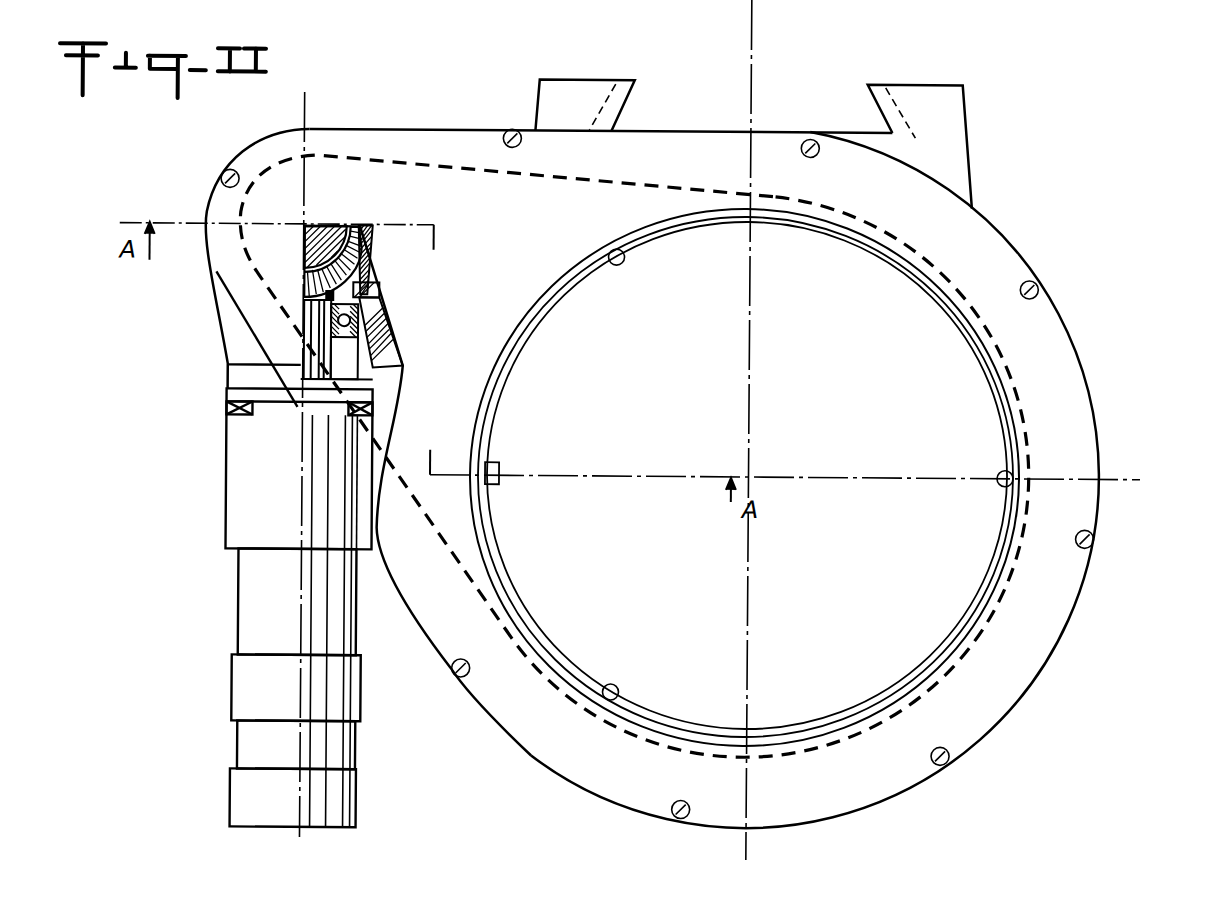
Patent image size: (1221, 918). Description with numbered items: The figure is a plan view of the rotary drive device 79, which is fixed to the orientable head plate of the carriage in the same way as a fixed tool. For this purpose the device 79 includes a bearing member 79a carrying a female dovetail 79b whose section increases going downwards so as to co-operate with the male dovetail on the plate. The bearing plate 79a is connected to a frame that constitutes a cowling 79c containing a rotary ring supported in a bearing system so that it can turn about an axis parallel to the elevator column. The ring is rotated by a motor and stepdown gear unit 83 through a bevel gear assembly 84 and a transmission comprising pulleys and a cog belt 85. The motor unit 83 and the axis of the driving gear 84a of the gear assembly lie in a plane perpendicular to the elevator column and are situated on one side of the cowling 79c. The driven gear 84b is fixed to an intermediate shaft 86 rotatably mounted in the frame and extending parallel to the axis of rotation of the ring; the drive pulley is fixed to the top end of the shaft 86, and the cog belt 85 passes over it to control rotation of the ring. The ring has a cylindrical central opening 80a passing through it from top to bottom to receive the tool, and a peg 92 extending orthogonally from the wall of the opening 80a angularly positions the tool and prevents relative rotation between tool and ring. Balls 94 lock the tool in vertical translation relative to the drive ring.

The drive device 79 is at (1100, 405).
The bearing member 79a is at (955, 113).
The female dovetail 79b is at (866, 106).
The cowling 79c is at (1085, 503).
The cylindrical central opening 80a is at (881, 258).
The motor and stepdown gear unit 83 is at (262, 492).
The bevel gear assembly 84 is at (374, 290).
The driving gear 84a is at (300, 298).
The driven gear 84b is at (366, 236).
The cog belt 85 is at (958, 272).
The intermediate shaft 86 is at (318, 227).
The peg 92 is at (499, 468).
The balls 94 is at (620, 266).